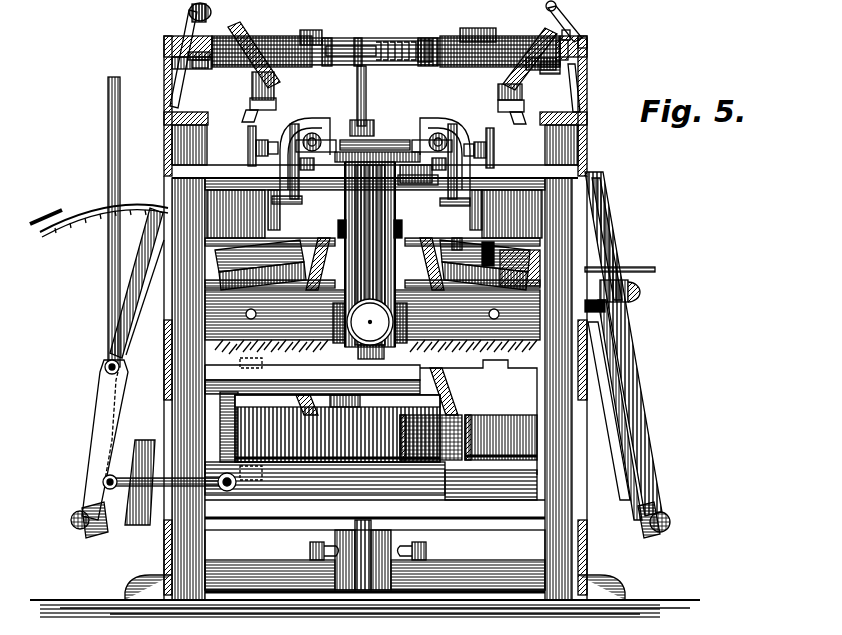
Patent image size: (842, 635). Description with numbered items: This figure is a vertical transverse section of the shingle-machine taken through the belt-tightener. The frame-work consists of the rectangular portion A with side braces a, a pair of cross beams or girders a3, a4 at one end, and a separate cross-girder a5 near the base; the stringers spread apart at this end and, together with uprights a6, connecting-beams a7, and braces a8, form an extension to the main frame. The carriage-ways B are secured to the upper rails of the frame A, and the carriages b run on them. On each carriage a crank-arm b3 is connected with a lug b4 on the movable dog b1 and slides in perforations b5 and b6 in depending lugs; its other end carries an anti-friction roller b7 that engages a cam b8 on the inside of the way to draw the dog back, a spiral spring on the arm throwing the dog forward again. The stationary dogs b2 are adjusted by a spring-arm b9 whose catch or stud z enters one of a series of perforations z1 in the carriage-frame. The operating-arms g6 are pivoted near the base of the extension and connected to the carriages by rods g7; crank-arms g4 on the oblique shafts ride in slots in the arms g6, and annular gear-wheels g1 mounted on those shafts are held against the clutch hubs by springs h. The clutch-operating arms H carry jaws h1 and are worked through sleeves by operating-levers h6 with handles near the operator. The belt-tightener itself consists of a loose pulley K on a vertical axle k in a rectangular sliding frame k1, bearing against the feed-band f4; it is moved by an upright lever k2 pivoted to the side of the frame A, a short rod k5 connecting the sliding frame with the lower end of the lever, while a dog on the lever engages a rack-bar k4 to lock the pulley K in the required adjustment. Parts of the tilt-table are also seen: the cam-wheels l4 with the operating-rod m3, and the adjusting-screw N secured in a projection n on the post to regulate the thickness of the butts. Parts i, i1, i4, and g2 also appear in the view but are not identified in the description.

The rectangular frame portion A is at (166, 136).
The side braces a is at (164, 338).
The carriage-ways B is at (166, 66).
The carriages b is at (318, 42).
The movable dog b1 is at (250, 38).
The stationary dogs b2 is at (540, 42).
The crank-arm b3 is at (380, 42).
The lug b4 is at (200, 66).
The perforation b5 is at (330, 66).
The perforation b6 is at (418, 66).
The anti-friction roller b7 is at (536, 68).
The cam b8 is at (560, 70).
The spring-arm b9 is at (562, 38).
The catch or stud z is at (568, 36).
The series of perforations z1 is at (587, 45).
The rods g7 is at (206, 12).
The operating-arms g6 is at (188, 22).
The bearing i is at (318, 124).
The bearing post i1 is at (250, 128).
The slide i4 is at (375, 213).
The projection n is at (322, 248).
The adjusting-screw N is at (418, 182).
The clutch-operating arms H is at (372, 324).
The springs h is at (450, 286).
The jaw h1 is at (492, 248).
The operating-levers h6 is at (644, 272).
The cross-girder a3 is at (374, 214).
The cross-girder a4 is at (388, 306).
The cross-girder a5 is at (484, 512).
The uprights a6 is at (609, 411).
The connecting-beams a7 is at (408, 553).
The braces a8 is at (638, 464).
The annular gear-wheels g1 is at (318, 248).
The cam arm g2 is at (292, 404).
The crank-arms g4 is at (636, 308).
The operating-rod m3 is at (520, 253).
The cam-wheels l4 is at (460, 235).
The vertical axle k is at (332, 392).
The sliding frame k1 is at (262, 366).
The loose pulley K is at (337, 428).
The upright lever k2 is at (103, 298).
The rack-bar k4 is at (68, 210).
The short rod k5 is at (152, 488).
The feed-band f4 is at (498, 414).